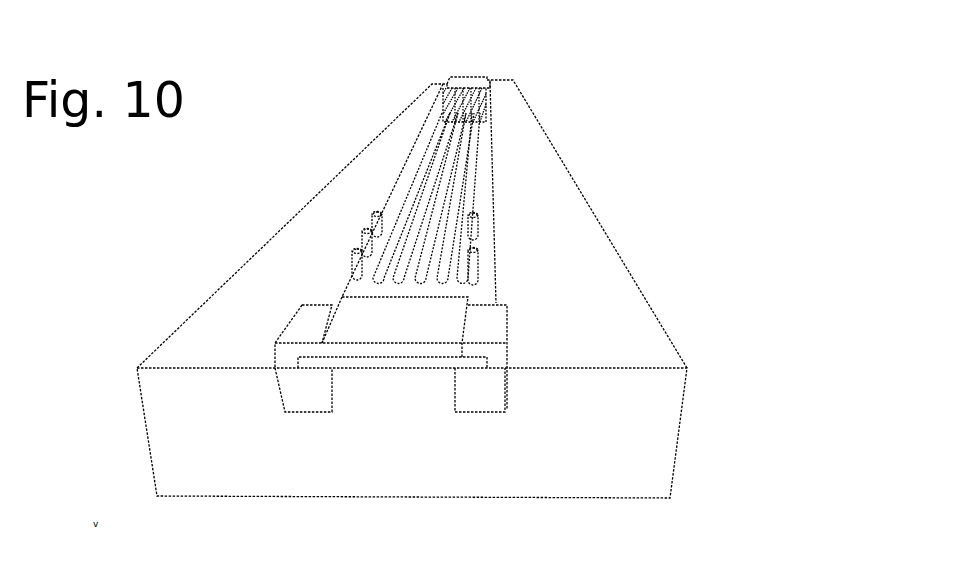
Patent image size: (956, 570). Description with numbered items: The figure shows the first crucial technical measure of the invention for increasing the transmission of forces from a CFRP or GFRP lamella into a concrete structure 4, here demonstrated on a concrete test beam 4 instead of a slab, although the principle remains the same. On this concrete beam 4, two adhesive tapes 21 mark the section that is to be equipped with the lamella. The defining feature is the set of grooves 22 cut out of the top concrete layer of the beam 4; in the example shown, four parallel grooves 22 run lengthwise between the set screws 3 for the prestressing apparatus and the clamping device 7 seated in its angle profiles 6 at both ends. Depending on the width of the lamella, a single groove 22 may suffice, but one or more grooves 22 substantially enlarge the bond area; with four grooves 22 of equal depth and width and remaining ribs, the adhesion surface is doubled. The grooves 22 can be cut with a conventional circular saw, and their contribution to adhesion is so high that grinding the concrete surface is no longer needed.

The concrete structure 4 is at (346, 180).
The adhesive tapes 21 is at (430, 139).
The grooves 22 is at (424, 171).
The set screws 3 is at (330, 241).
The angle profiles 6 is at (281, 331).
The clamping device 7 is at (372, 328).